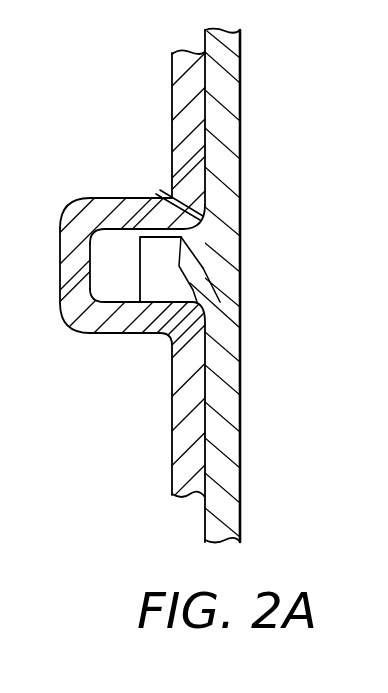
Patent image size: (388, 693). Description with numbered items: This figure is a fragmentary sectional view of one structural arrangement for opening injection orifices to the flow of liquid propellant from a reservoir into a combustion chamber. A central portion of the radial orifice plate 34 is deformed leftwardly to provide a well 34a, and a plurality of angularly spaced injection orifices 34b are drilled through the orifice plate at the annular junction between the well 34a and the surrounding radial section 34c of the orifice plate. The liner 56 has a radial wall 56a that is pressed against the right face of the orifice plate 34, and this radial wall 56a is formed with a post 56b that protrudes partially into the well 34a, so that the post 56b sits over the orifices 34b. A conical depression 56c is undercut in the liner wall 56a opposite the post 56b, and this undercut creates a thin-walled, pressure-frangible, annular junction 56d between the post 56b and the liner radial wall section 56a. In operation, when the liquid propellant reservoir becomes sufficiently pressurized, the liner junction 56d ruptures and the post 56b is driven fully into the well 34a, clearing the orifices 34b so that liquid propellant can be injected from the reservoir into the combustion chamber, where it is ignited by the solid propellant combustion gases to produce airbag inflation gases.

The radial orifice plate 34 is at (172, 82).
The well 34a is at (82, 260).
The injection orifices 34b is at (157, 198).
The radial section 34c is at (187, 410).
The liner 56 is at (227, 52).
The radial wall 56a is at (240, 153).
The post 56b is at (170, 273).
The conical depression 56c is at (203, 268).
The annular junction 56d is at (213, 302).